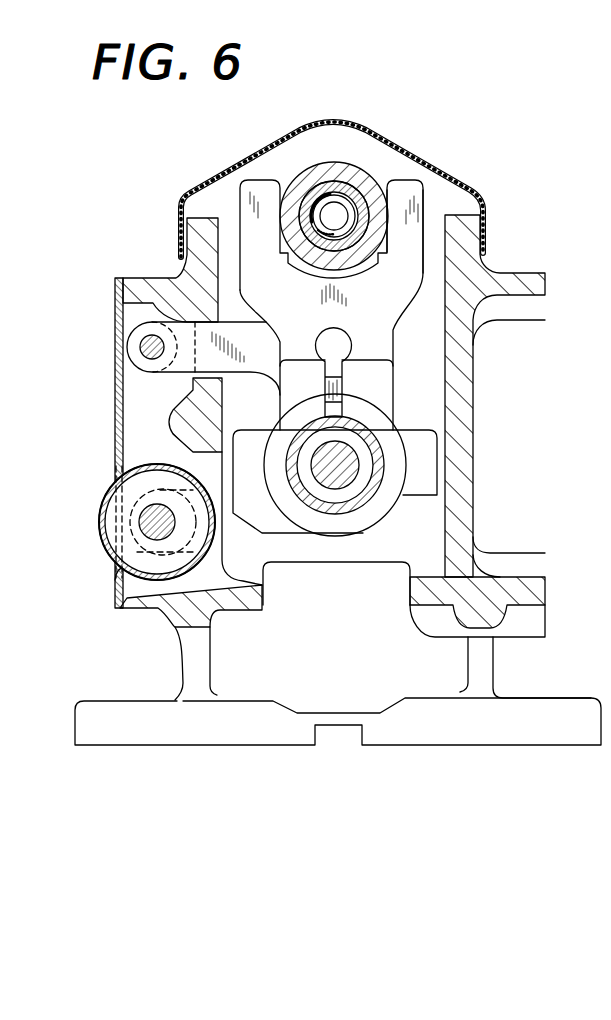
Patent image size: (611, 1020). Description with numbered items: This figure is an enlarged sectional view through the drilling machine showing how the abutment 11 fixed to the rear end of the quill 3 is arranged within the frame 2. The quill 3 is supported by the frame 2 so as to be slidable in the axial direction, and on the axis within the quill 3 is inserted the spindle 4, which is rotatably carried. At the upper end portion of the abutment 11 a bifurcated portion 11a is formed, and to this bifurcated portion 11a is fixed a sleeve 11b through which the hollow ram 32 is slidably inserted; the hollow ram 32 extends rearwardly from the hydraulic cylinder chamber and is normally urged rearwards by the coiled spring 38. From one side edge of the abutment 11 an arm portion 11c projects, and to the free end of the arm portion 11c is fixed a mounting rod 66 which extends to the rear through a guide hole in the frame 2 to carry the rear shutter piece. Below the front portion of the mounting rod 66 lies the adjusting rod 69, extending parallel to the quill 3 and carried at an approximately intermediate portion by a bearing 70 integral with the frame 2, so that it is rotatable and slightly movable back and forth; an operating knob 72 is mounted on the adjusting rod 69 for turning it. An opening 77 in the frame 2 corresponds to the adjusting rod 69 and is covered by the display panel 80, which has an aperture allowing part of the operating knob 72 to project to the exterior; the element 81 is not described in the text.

The frame 2 is at (500, 277).
The quill 3 is at (370, 487).
The spindle 4 is at (345, 477).
The abutment 11 is at (402, 335).
The bifurcated portion 11a is at (410, 192).
The sleeve 11b is at (358, 170).
The arm portion 11c is at (182, 332).
The hollow ram 32 is at (325, 184).
The coiled spring 38 is at (271, 150).
The mounting rod 66 is at (143, 353).
The adjusting rod 69 is at (150, 530).
The bearing 70 is at (168, 492).
The operating knob 72 is at (113, 512).
The opening 77 is at (127, 316).
The display panel 80 is at (118, 430).
The tab of plate 81 is at (115, 574).